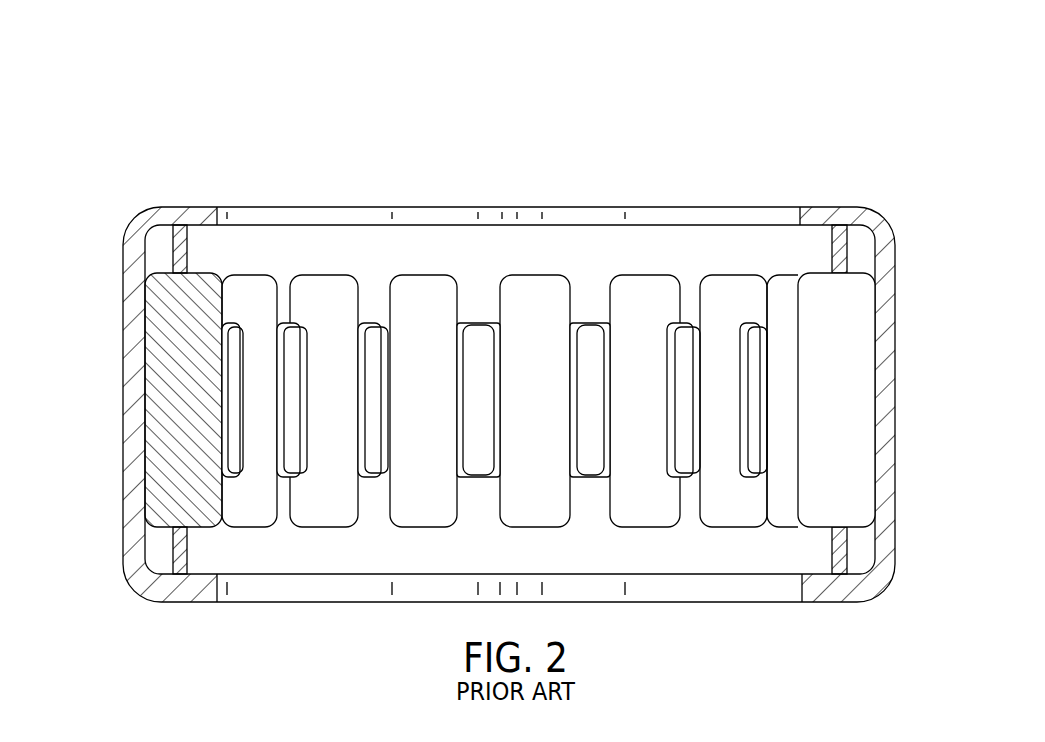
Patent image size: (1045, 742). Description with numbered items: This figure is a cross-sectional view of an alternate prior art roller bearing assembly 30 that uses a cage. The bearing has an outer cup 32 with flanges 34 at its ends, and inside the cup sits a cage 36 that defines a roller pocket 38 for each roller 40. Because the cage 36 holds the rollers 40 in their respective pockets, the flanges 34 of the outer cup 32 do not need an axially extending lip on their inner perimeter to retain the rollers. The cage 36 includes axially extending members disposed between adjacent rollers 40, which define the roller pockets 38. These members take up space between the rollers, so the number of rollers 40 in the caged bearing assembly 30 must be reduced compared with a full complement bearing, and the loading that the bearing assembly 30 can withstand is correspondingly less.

The roller bearing assembly 30 is at (179, 163).
The outer cup 32 is at (105, 387).
The flanges 34 is at (830, 207).
The cage 36 is at (563, 240).
The roller pocket 38 is at (489, 488).
The roller 40 is at (861, 430).